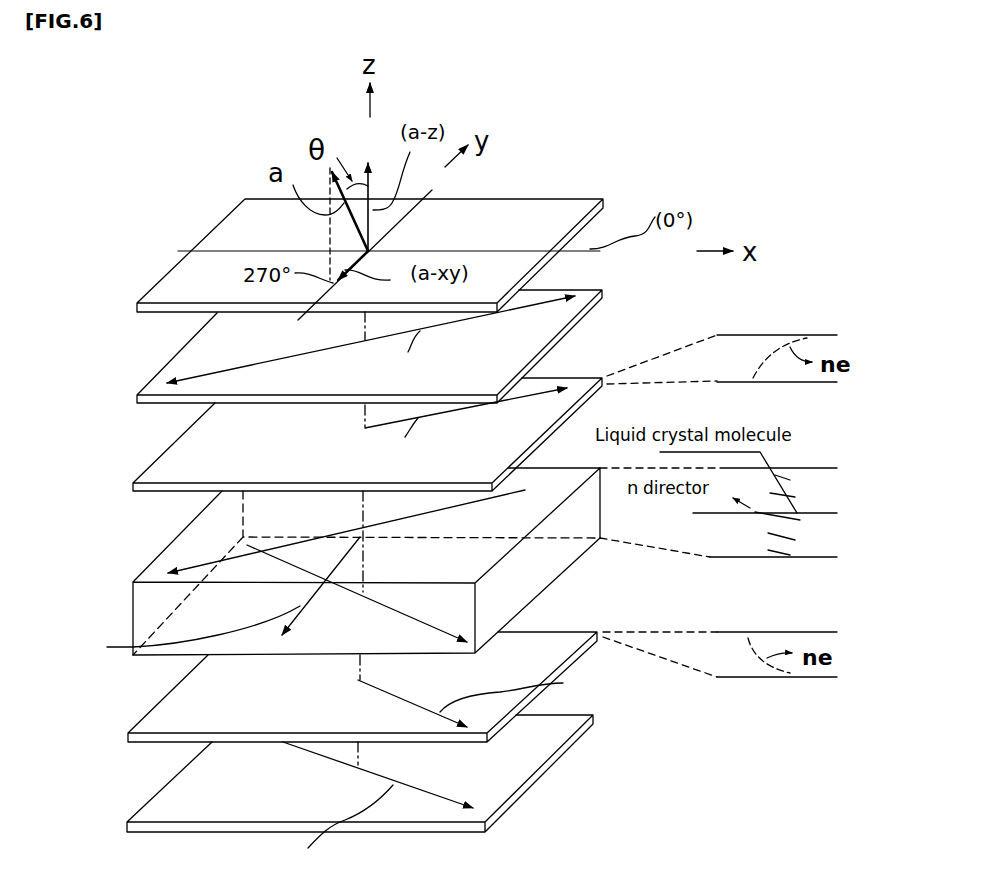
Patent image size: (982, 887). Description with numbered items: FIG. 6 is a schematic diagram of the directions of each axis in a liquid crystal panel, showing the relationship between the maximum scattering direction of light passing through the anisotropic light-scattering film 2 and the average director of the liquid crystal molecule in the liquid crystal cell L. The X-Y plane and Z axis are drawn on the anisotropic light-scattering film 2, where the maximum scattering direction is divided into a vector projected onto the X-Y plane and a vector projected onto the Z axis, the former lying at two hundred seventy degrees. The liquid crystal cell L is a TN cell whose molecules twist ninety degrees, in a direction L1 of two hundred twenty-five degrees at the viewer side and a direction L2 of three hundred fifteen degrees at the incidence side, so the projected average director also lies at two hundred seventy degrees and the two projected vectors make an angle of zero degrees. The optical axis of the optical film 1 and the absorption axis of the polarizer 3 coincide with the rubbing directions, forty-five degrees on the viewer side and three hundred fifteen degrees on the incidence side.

The optical film 1 is at (146, 470).
The anisotropic light-scattering film 2 is at (160, 282).
The polarizer 3 is at (153, 378).
The liquid crystal cell L is at (133, 582).
The twist direction at the viewer side L1 is at (507, 491).
The twist direction at the incidence side L2 is at (377, 603).